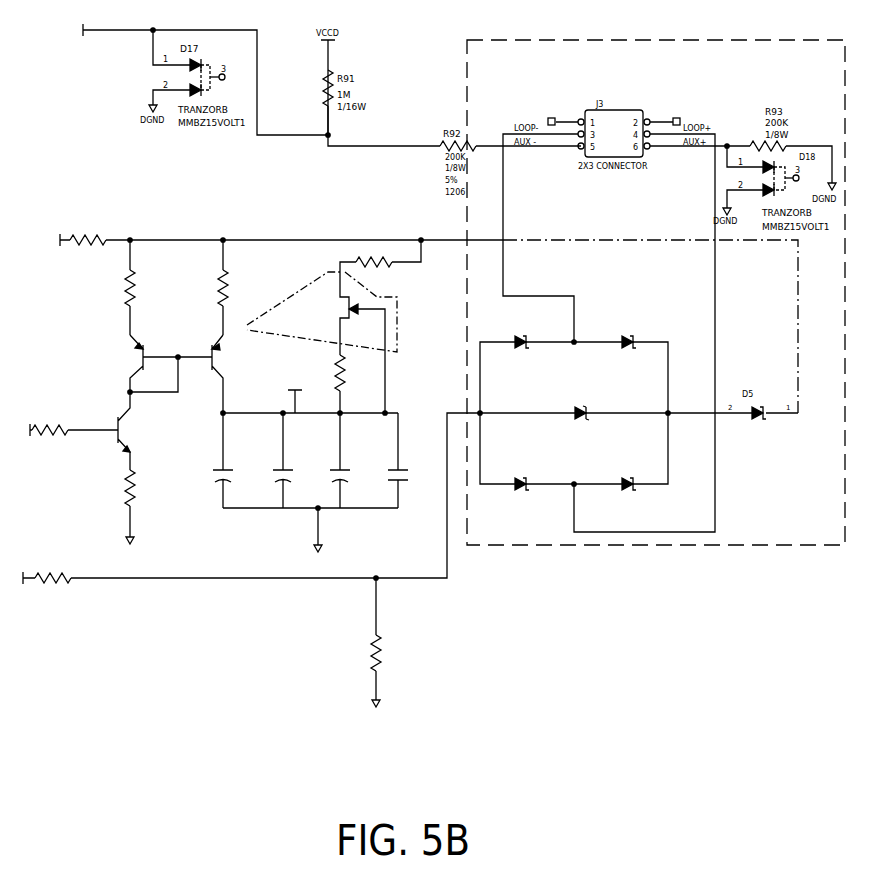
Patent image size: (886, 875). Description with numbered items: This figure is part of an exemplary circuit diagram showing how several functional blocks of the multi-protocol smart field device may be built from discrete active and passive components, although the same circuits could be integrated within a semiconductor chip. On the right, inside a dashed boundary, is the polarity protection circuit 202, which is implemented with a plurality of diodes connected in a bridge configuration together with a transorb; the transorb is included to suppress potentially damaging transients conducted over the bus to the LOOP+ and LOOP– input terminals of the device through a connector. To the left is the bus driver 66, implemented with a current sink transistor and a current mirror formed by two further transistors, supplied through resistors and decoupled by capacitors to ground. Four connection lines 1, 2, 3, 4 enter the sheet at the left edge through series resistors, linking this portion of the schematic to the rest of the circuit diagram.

The first terminal line 1 is at (205, 68).
The second terminal line 2 is at (270, 257).
The third terminal line 3 is at (61, 442).
The fourth terminal line 4 is at (248, 523).
The bus driver 66 is at (250, 232).
The polarity protection circuit 202 is at (585, 318).